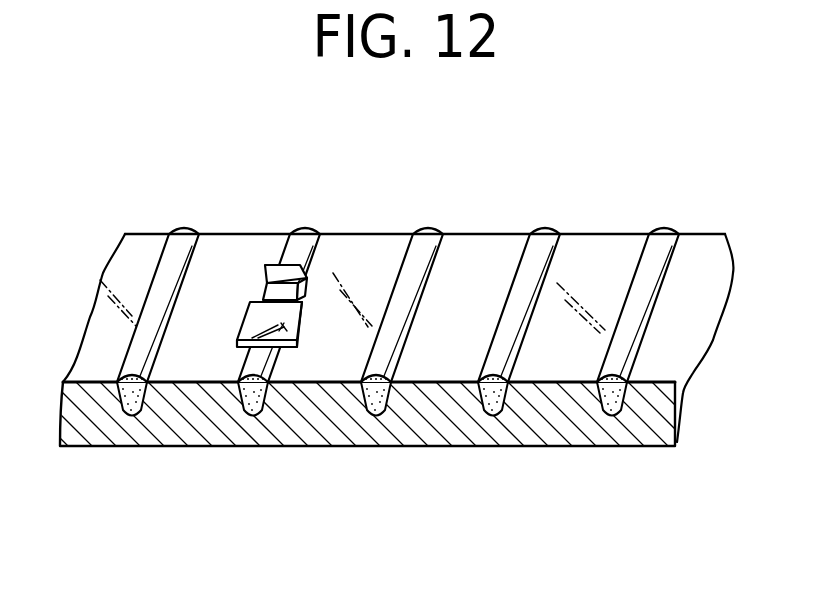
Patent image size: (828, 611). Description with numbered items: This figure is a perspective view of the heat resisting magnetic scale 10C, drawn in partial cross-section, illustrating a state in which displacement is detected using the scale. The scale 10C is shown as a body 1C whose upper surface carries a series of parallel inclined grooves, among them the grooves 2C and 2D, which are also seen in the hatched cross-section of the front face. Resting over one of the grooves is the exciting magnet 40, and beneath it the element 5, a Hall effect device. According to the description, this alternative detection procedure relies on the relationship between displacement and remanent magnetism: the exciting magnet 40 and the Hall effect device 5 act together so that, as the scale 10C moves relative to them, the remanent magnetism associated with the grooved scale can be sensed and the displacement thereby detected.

The substrate 1C is at (547, 418).
The groove 2C is at (117, 417).
The groove 2D is at (658, 243).
The Hall effect device 5 is at (290, 349).
The exciting magnet 40 is at (272, 262).
The heat resisting magnetic scale 10C is at (402, 455).